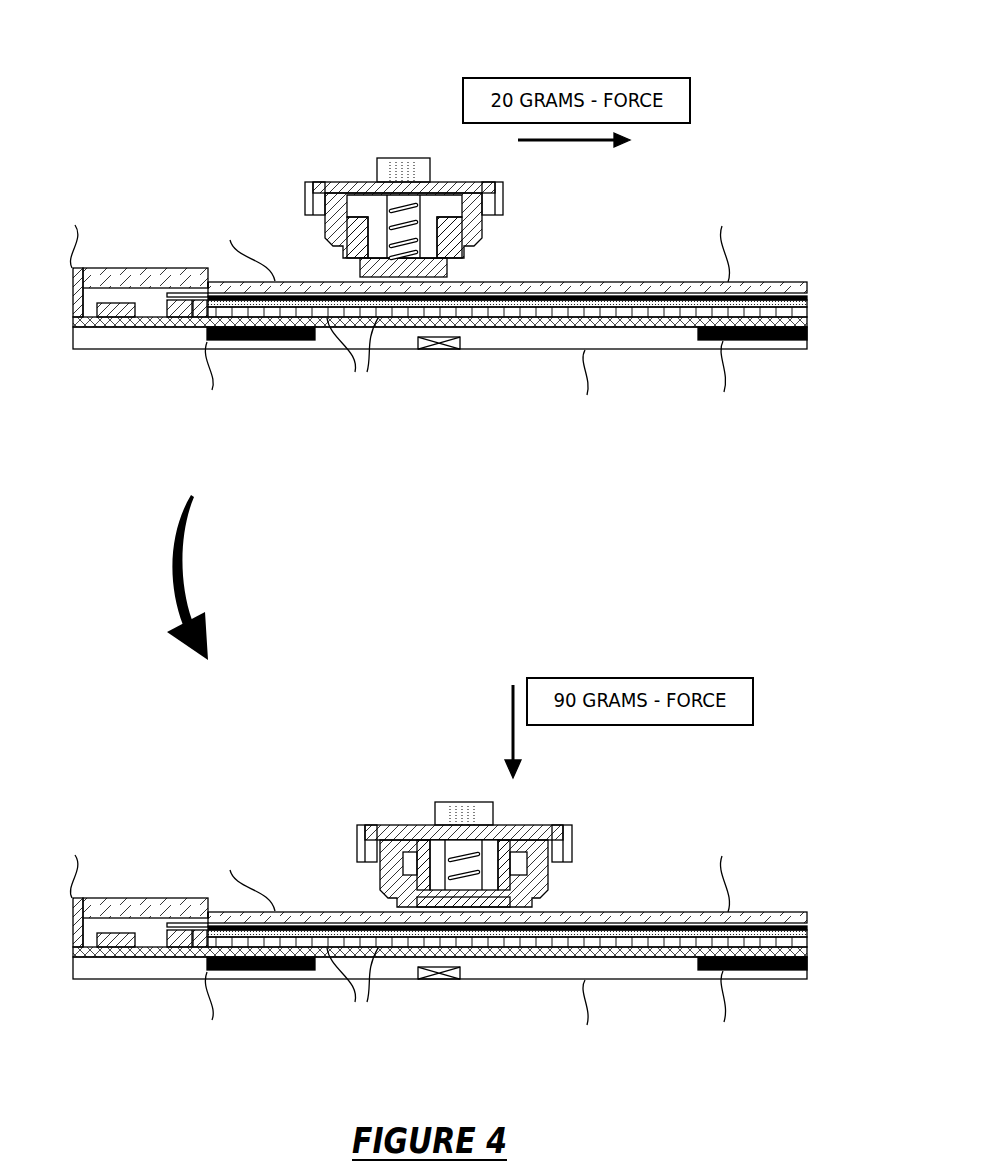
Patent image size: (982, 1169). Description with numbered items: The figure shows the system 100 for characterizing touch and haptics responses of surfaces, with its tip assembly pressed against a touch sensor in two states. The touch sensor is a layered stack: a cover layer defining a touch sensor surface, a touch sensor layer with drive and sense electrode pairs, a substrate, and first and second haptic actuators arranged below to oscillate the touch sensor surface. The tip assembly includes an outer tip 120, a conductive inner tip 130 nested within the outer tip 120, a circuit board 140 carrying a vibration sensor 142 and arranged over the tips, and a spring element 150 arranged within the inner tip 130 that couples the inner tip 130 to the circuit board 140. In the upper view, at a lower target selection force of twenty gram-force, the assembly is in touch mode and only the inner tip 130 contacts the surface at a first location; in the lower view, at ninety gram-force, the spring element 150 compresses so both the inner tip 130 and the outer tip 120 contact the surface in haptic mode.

The system 100 is at (166, 62).
The outer tip 120 is at (473, 230).
The inner tip 130 is at (362, 267).
The circuit board 140 is at (340, 182).
The vibration sensor 142 is at (400, 158).
The spring element 150 is at (413, 228).